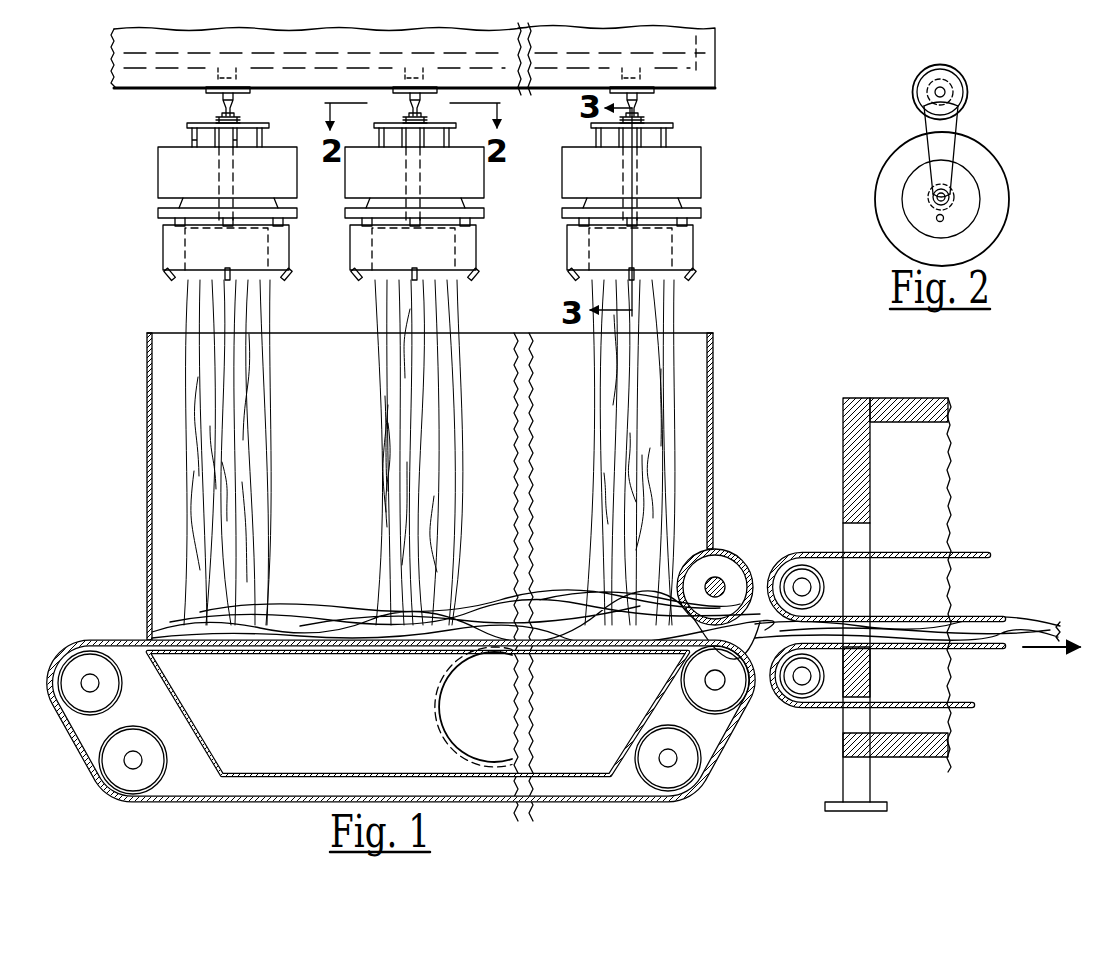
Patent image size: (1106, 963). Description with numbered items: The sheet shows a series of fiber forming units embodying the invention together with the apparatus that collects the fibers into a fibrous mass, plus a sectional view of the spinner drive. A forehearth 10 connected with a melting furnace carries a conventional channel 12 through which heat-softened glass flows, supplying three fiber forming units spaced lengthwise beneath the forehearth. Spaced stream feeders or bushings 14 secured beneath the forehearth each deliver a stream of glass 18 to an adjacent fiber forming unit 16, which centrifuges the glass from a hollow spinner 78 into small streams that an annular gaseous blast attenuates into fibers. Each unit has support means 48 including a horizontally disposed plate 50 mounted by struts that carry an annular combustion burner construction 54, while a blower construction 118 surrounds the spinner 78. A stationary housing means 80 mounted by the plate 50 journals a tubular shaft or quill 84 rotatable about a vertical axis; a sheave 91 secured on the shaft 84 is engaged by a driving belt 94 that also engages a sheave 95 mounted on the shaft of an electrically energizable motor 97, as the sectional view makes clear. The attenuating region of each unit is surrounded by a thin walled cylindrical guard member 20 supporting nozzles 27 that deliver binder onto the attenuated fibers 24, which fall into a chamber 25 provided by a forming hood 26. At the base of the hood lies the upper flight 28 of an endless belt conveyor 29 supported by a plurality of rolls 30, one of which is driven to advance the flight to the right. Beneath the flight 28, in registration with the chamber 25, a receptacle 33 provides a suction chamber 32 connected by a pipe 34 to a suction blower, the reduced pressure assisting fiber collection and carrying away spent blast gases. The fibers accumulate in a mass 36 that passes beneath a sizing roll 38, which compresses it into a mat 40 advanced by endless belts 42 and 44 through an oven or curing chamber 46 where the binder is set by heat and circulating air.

In FIG. 1, the forehearth 10 is at (718, 38).
In FIG. 1, the channel 12 is at (300, 50).
In FIG. 1, the stream feeder or bushing 14 is at (206, 93).
In FIG. 1, the fiber forming unit 16 is at (152, 161).
In FIG. 2, the fiber forming unit 16 is at (1000, 152).
In FIG. 1, the stream of glass 18 is at (222, 105).
In FIG. 2, the stream of glass 18 is at (936, 219).
In FIG. 1, the guard member 20 is at (168, 228).
In FIG. 1, the attenuated fibers 24 is at (240, 305).
In FIG. 1, the chamber 25 is at (306, 406).
In FIG. 1, the forming hood 26 is at (147, 399).
In FIG. 1, the nozzles 27 is at (228, 270).
In FIG. 1, the upper flight 28 is at (137, 639).
In FIG. 1, the conveyor 29 is at (275, 803).
In FIG. 1, the rolls 30 is at (96, 707).
In FIG. 1, the suction chamber 32 is at (315, 724).
In FIG. 1, the receptacle 33 is at (212, 782).
In FIG. 1, the pipe 34 is at (441, 692).
In FIG. 1, the mass of fibers 36 is at (580, 595).
In FIG. 1, the sizing roll 38 is at (732, 562).
In FIG. 1, the mat 40 is at (1042, 620).
In FIG. 1, the endless belt 42 is at (986, 615).
In FIG. 1, the endless belt 44 is at (986, 652).
In FIG. 1, the oven or curing chamber 46 is at (885, 447).
In FIG. 1, the support means 48 is at (180, 131).
In FIG. 1, the plate or frame member 50 is at (260, 124).
In FIG. 2, the plate or frame member 50 is at (961, 162).
In FIG. 2, the annular combustion burner construction 54 is at (878, 208).
In FIG. 1, the spinner 78 is at (195, 232).
In FIG. 1, the housing means 80 is at (212, 135).
In FIG. 2, the shaft or quill 84 is at (952, 201).
In FIG. 1, the sheave or pulley 91 is at (240, 117).
In FIG. 2, the sheave or pulley 91 is at (950, 182).
In FIG. 2, the driving belt 94 is at (958, 118).
In FIG. 2, the sheave or pulley 95 is at (946, 80).
In FIG. 2, the motor 97 is at (955, 92).
In FIG. 1, the blower construction 118 is at (170, 215).